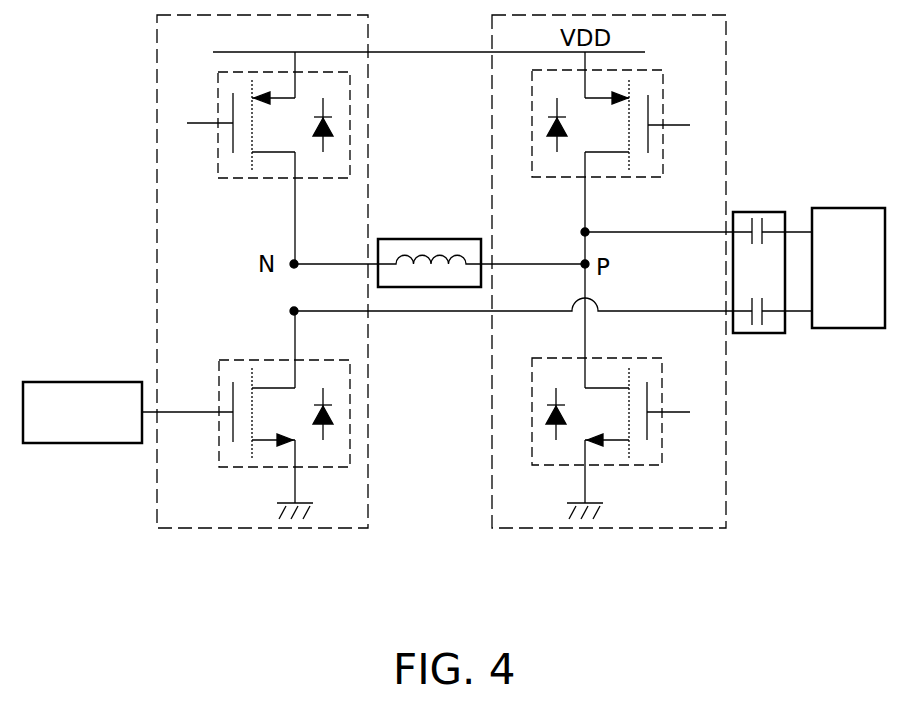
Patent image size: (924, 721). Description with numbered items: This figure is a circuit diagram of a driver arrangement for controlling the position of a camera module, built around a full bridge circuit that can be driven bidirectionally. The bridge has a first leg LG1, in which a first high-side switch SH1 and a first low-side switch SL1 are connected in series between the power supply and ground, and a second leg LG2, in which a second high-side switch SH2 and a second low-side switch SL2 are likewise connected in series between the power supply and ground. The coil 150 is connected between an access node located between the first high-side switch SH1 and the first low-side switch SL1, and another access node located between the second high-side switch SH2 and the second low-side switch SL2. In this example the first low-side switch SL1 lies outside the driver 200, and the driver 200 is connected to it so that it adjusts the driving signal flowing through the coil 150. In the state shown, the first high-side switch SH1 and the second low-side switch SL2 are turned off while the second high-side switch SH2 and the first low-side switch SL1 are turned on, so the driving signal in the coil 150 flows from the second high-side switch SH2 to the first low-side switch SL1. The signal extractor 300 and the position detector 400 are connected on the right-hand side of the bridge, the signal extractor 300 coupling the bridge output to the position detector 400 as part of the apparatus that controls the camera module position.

The coil 150 is at (453, 239).
The driver 200 is at (82, 412).
The signal extractor 300 is at (772, 210).
The position detector 400 is at (848, 268).
The first leg LG1 is at (258, 528).
The second leg LG2 is at (604, 528).
The first high-side switch SH1 is at (350, 125).
The second high-side switch SH2 is at (532, 150).
The first low-side switch SL1 is at (350, 392).
The second low-side switch SL2 is at (532, 412).